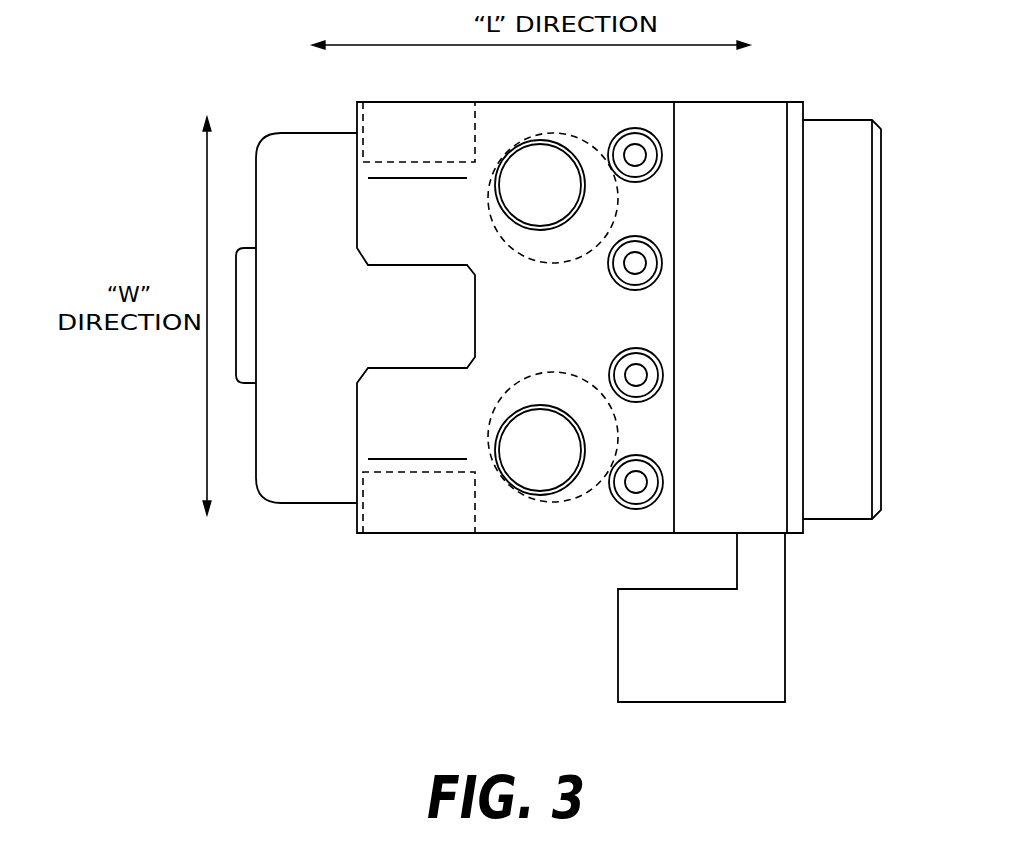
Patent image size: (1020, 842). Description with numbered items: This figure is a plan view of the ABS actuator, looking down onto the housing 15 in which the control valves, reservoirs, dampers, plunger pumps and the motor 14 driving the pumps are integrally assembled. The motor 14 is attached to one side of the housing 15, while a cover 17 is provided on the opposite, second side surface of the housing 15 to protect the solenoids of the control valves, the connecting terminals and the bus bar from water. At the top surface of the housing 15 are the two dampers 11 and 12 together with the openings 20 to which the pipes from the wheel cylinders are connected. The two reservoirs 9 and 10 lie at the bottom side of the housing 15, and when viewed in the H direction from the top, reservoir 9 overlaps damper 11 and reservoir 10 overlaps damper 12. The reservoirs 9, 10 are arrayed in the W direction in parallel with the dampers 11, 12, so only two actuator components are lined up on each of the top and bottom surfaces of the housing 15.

The reservoir 9 is at (586, 496).
The reservoir 10 is at (596, 146).
The damper 11 is at (527, 493).
The damper 12 is at (566, 148).
The motor 14 is at (256, 205).
The housing 15 is at (503, 102).
The cover 17 is at (875, 232).
The opening 20 is at (648, 132).